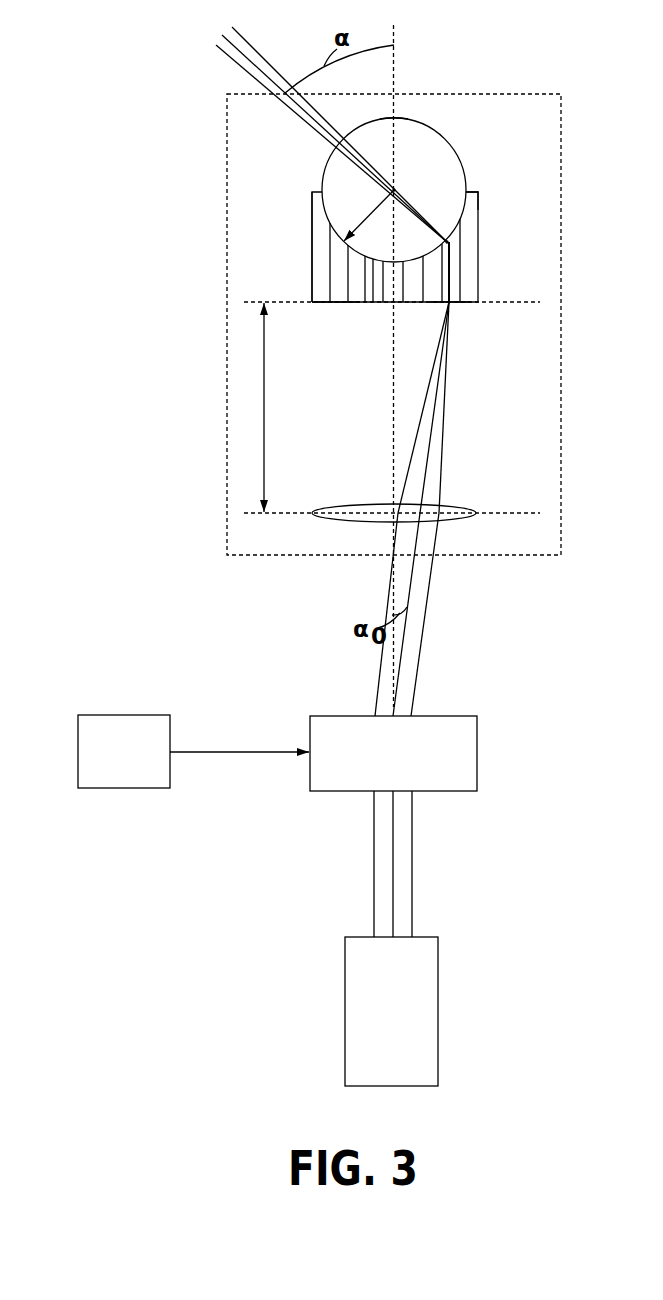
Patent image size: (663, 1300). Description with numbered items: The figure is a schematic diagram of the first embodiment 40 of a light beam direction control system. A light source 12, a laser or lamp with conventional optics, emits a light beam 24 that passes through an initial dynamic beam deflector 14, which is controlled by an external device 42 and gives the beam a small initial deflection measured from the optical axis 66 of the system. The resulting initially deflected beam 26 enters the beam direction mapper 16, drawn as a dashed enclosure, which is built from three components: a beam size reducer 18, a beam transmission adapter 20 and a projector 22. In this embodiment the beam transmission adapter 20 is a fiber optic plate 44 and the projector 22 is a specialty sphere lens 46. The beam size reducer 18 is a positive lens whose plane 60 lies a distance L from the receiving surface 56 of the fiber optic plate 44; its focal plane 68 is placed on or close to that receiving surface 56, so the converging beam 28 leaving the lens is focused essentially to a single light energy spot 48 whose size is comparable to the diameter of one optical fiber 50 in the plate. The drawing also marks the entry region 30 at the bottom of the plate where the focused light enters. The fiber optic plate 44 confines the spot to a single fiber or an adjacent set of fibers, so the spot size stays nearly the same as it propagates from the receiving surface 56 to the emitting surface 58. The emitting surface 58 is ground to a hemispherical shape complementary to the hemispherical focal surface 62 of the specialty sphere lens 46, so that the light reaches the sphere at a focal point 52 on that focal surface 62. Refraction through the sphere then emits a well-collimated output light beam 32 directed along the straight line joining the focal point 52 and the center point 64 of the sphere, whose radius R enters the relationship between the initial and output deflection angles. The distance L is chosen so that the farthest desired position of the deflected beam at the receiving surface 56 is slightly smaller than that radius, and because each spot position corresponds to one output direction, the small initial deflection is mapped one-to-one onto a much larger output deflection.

The light source 12 is at (439, 1017).
The initial dynamic beam deflector 14 is at (478, 759).
The beam direction mapper 16 is at (226, 222).
The beam size reducer 18 is at (319, 506).
The beam transmission adapter 20 is at (481, 284).
The projector 22 is at (461, 149).
The light beam 24 is at (394, 888).
The initially deflected beam 26 is at (403, 648).
The focused light beam 28 is at (436, 412).
The aperture in holder bottom 30 is at (444, 292).
The output light beam 32 is at (262, 44).
The first embodiment 40 is at (581, 260).
The external device 42 is at (78, 746).
The fiber optic plate 44 is at (482, 205).
The specialty sphere lens 46 is at (421, 120).
The light energy spot 48 is at (451, 306).
The optical fiber 50 is at (468, 242).
The focal point 52 is at (448, 240).
The receiving surface 56 is at (337, 305).
The emitting surface 58 is at (334, 205).
The plane of the beam size reducer 60 is at (504, 512).
The hemispherical focal surface 62 is at (377, 288).
The center point 64 is at (398, 188).
The optical axis 66 is at (395, 76).
The focal plane 68 is at (284, 300).
The distance L is at (266, 408).
The radius R is at (367, 218).